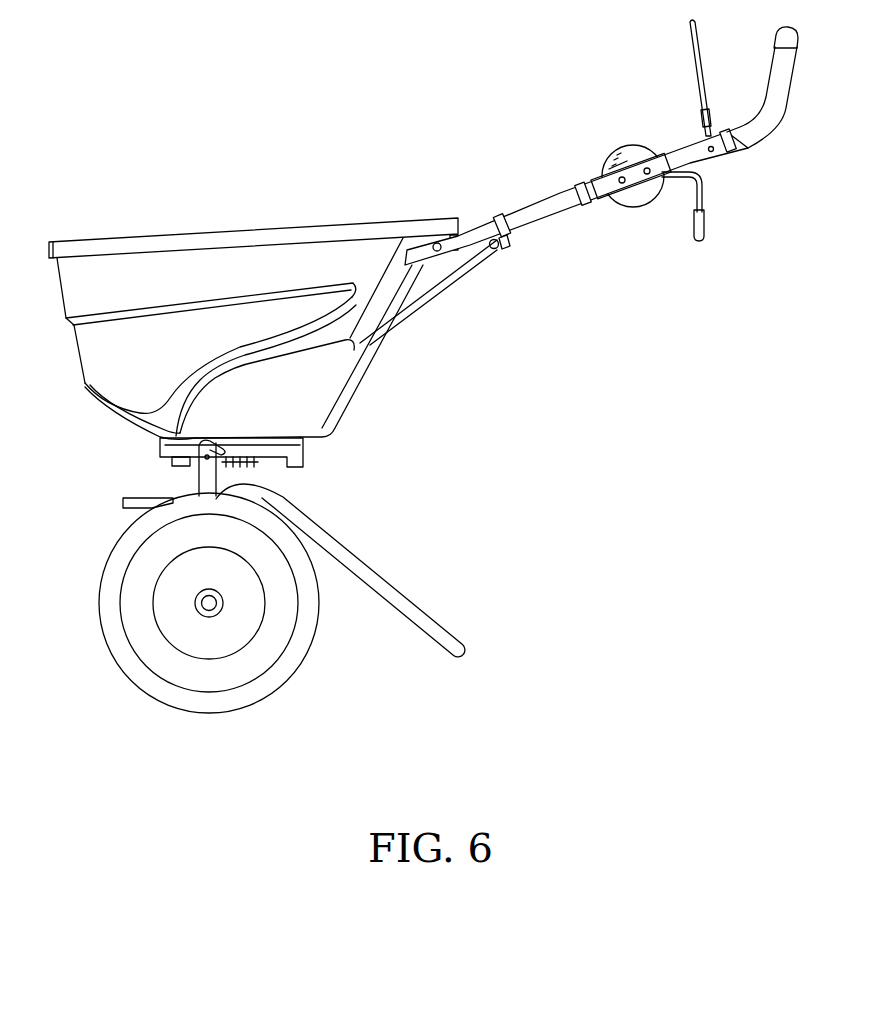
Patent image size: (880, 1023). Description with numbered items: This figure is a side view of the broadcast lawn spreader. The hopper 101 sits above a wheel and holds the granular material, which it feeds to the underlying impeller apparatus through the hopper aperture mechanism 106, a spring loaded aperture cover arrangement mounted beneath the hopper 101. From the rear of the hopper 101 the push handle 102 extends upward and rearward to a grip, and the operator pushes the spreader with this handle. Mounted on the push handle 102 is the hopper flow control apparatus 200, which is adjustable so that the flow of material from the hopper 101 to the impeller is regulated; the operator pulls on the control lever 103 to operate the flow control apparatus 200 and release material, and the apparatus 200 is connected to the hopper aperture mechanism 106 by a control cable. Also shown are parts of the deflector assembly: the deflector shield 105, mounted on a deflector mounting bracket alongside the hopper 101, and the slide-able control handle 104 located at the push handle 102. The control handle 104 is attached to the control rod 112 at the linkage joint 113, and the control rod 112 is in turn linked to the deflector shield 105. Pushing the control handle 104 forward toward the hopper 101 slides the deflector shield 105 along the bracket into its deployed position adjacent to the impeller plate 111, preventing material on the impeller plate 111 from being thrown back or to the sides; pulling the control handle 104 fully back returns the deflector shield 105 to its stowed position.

The hopper 101 is at (279, 228).
The push handle 102 is at (792, 77).
The control lever 103 is at (698, 38).
The control handle 104 is at (705, 226).
The deflector shield 105 is at (330, 398).
The hopper aperture mechanism 106 is at (287, 482).
The impeller plate 111 is at (132, 498).
The control rod 112 is at (427, 295).
The linkage joint 113 is at (500, 250).
The hopper flow control apparatus 200 is at (596, 145).